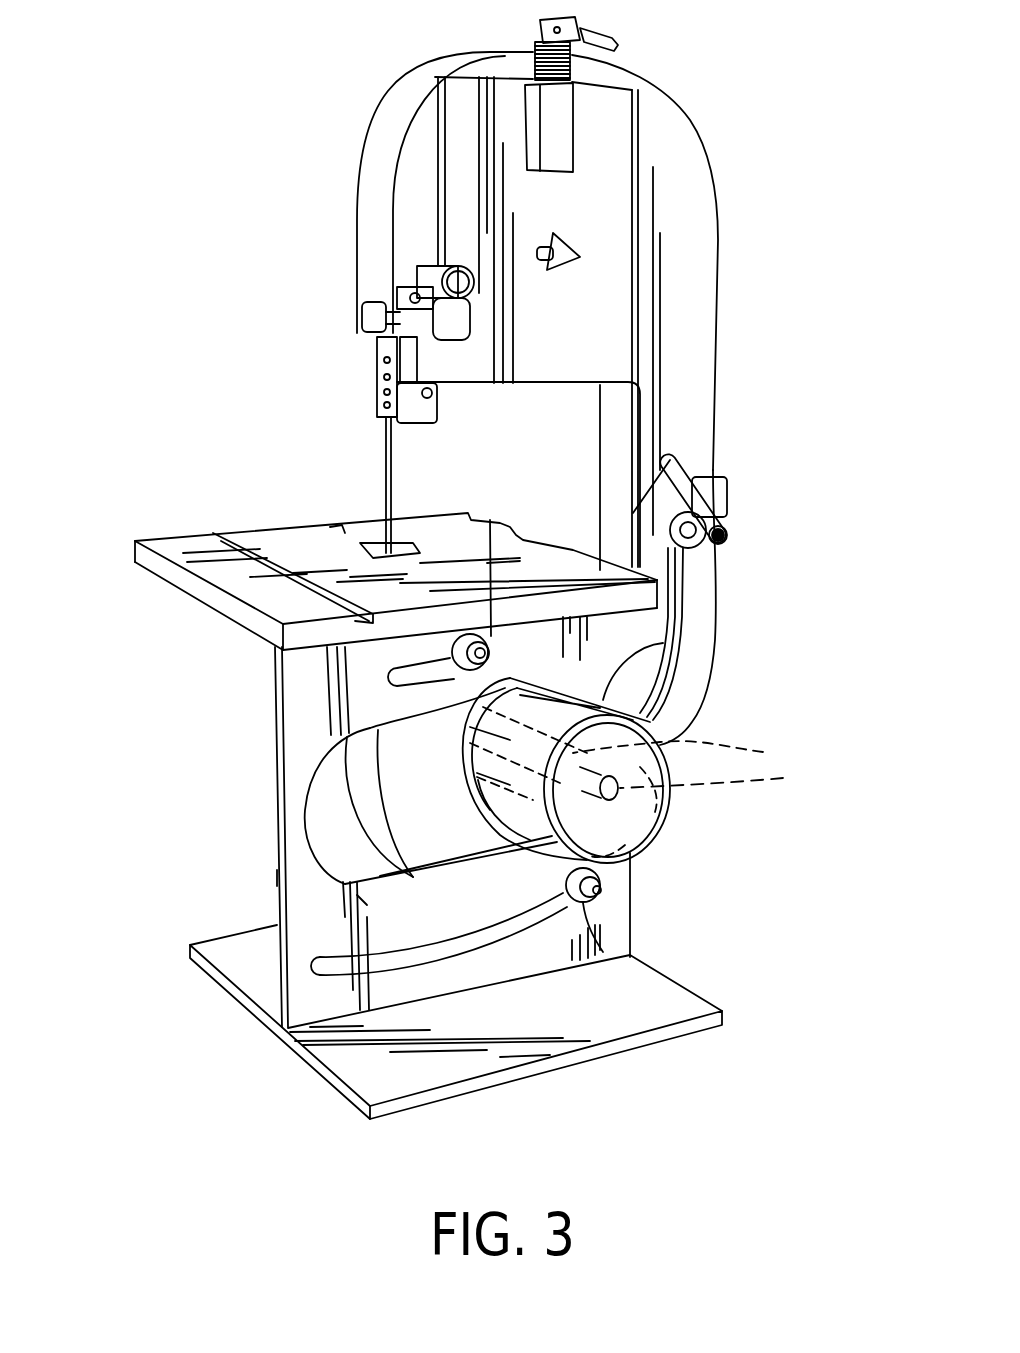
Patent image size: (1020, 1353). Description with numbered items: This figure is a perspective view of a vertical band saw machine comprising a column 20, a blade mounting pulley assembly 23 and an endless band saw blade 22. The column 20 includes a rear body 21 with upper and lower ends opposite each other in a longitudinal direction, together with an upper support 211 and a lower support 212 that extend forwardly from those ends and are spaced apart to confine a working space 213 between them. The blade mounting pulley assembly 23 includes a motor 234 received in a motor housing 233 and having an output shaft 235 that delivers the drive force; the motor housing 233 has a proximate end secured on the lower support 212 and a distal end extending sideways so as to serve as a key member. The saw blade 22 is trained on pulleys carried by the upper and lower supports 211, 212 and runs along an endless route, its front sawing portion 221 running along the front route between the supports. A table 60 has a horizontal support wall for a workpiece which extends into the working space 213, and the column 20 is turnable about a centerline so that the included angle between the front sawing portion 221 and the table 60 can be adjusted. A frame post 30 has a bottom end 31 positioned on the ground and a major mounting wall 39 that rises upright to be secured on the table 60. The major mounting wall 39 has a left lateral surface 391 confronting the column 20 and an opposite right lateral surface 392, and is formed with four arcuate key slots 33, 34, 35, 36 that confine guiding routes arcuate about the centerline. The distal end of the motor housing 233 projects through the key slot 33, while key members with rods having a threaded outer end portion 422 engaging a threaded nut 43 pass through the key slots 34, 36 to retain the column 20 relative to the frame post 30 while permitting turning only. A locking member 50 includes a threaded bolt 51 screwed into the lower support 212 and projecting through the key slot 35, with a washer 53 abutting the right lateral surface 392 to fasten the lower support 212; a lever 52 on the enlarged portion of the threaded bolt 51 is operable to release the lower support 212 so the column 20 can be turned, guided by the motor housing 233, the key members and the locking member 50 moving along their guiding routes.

The column 20 is at (722, 308).
The rear body 21 is at (717, 368).
The upper support 211 is at (460, 170).
The lower support 212 is at (407, 810).
The working space 213 is at (510, 403).
The endless band saw blade 22 is at (373, 430).
The front sawing portion 221 is at (370, 500).
The blade mounting pulley assembly 23 is at (665, 643).
The motor housing 233 is at (637, 812).
The motor 234 is at (715, 785).
The output shaft 235 is at (696, 772).
The frame post 30 is at (270, 758).
The bottom end 31 is at (323, 1074).
The key slot 33 is at (367, 887).
The key slot 34 is at (455, 686).
The key slot 35 is at (667, 677).
The key slot 36 is at (483, 950).
The major mounting wall 39 is at (620, 873).
The left lateral surface 391 is at (277, 878).
The right lateral surface 392 is at (295, 997).
The threaded outer end portion 422 is at (490, 638).
The threaded nut 43 is at (462, 638).
The locking member 50 is at (738, 552).
The threaded bolt 51 is at (733, 533).
The lever 52 is at (670, 470).
The washer 53 is at (690, 550).
The table 60 is at (180, 596).